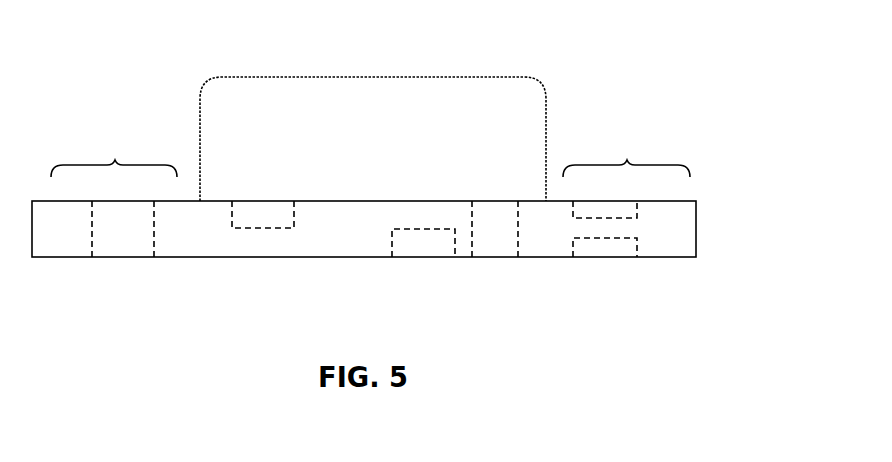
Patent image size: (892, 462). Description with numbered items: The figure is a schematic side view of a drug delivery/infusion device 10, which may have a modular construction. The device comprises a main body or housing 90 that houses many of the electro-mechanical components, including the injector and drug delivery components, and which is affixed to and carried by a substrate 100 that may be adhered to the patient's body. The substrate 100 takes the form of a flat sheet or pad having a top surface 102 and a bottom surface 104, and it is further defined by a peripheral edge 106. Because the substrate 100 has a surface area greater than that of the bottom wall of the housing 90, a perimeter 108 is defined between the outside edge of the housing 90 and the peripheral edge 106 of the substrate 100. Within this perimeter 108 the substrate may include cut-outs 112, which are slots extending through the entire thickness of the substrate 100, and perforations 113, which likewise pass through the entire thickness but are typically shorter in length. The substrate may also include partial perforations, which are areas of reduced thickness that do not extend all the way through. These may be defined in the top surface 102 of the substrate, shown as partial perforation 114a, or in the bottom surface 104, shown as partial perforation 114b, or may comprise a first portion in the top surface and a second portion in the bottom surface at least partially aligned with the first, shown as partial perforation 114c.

The drug delivery/infusion device 10 is at (447, 50).
The housing 90 is at (338, 122).
The substrate 100 is at (657, 257).
The top surface 102 is at (637, 201).
The bottom surface 104 is at (193, 257).
The peripheral edge 106 is at (696, 227).
The perimeter 108 is at (370, 152).
The cut-outs 112 is at (123, 240).
The perforations 113 is at (495, 237).
The partial perforation defined in the top surface 114a is at (263, 218).
The partial perforation defined in the bottom surface 114b is at (422, 240).
The partial perforation with aligned top and bottom portions 114c is at (582, 209).